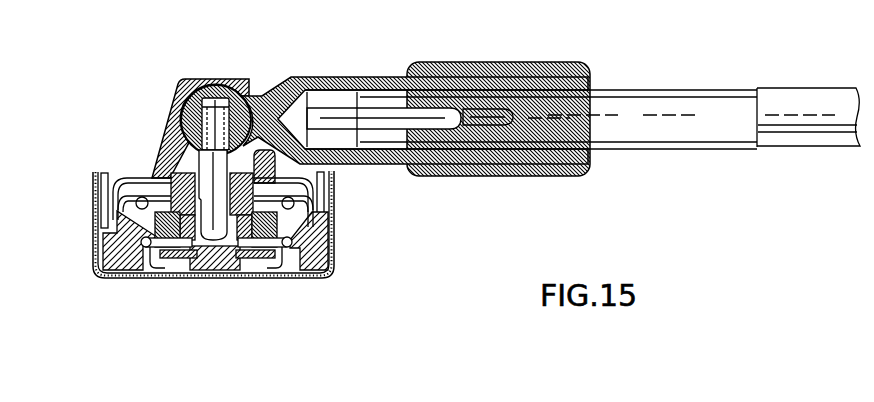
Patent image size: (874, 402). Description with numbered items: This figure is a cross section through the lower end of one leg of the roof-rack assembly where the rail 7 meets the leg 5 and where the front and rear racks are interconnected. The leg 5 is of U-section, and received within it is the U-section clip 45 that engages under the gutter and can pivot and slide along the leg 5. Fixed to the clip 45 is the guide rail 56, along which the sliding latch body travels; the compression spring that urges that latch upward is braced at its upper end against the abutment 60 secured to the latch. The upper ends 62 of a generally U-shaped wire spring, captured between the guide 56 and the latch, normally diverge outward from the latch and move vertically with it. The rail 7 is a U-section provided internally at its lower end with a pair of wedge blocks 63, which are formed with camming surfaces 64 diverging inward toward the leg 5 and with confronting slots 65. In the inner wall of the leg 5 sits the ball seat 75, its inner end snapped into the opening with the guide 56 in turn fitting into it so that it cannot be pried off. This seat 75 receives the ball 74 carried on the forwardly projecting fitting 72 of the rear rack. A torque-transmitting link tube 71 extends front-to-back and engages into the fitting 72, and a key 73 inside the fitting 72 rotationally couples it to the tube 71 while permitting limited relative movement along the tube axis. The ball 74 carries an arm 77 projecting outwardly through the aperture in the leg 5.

The leg 5 is at (124, 173).
The rail 7 is at (328, 278).
The clip 45 is at (312, 196).
The guide rail 56 is at (181, 256).
The abutment 60 is at (231, 242).
The upper ends of wire spring 62 is at (140, 256).
The wedge blocks 63 is at (117, 268).
The camming surfaces 64 is at (300, 235).
The slots 65 is at (145, 250).
The link tube 71 is at (806, 128).
The fitting 72 is at (582, 170).
The key 73 is at (443, 120).
The ball 74 is at (240, 97).
The ball seat 75 is at (187, 81).
The arm 77 is at (218, 175).